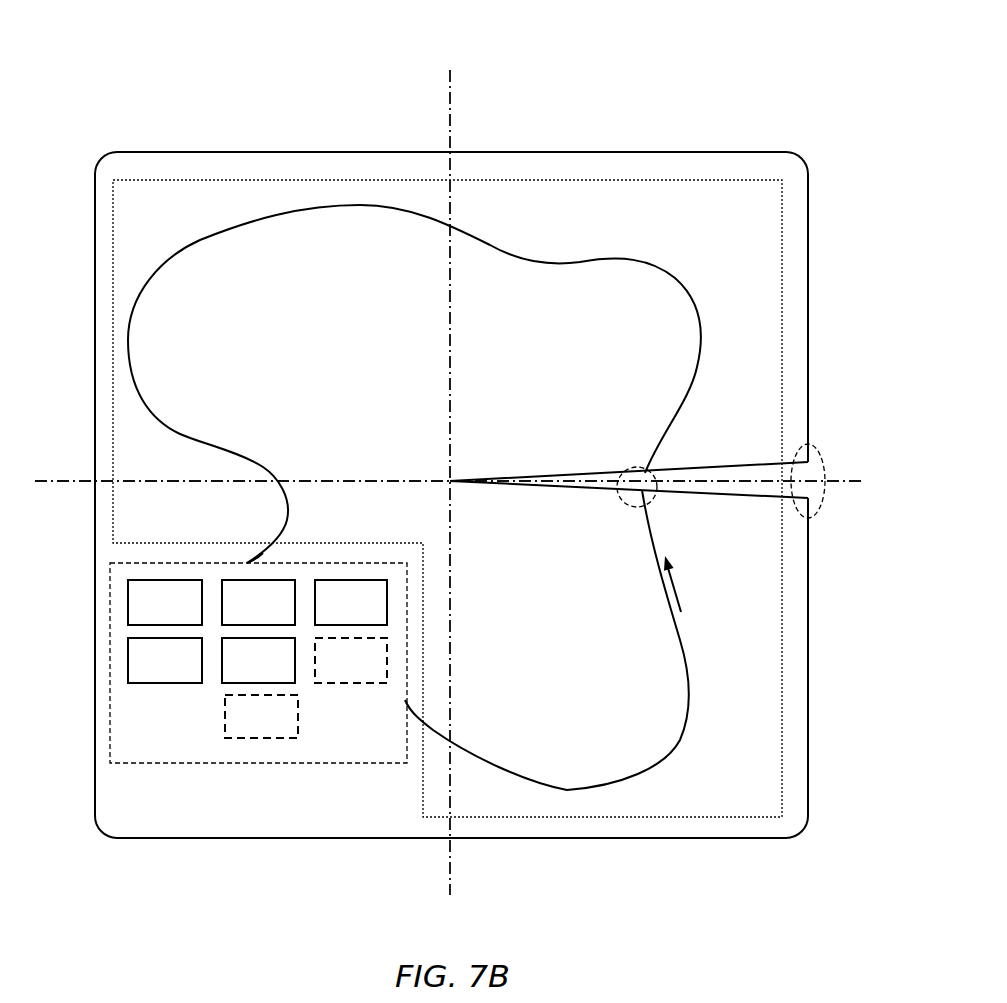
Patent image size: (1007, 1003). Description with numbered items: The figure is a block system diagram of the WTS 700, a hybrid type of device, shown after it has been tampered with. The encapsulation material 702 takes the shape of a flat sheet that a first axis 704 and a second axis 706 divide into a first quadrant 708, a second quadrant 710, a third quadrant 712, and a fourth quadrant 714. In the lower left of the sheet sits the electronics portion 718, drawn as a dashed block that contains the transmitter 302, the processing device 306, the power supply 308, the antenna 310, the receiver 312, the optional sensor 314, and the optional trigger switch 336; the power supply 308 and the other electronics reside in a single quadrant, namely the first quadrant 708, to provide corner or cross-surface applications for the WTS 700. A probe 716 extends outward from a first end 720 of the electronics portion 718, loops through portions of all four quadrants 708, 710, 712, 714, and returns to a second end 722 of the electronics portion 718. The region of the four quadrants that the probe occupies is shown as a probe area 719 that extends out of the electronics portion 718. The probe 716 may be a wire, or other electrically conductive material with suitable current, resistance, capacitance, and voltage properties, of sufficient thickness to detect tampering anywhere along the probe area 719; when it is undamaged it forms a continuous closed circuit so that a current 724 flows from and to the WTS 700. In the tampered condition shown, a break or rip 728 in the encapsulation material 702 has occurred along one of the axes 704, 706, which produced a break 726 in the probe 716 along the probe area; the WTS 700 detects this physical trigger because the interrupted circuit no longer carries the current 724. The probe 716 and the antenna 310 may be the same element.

The WTS 700 is at (537, 65).
The encapsulation material 702 is at (451, 495).
The first axis 704 is at (447, 870).
The second axis 706 is at (842, 480).
The first quadrant 708 is at (368, 510).
The second quadrant 710 is at (360, 442).
The third quadrant 712 is at (539, 440).
The fourth quadrant 714 is at (541, 528).
The probe 716 is at (692, 292).
The electronics portion 718 is at (258, 663).
The probe area 719 is at (447, 498).
The first end 720 is at (247, 561).
The second end 722 is at (405, 700).
The current 724 is at (680, 596).
The break 726 is at (663, 473).
The break or rip 728 is at (817, 453).
The transmitter 302 is at (165, 602).
The processing device 306 is at (258, 602).
The power supply 308 is at (351, 602).
The antenna 310 is at (165, 660).
The receiver 312 is at (258, 660).
The optional sensor 314 is at (351, 660).
The optional trigger switch 336 is at (261, 716).